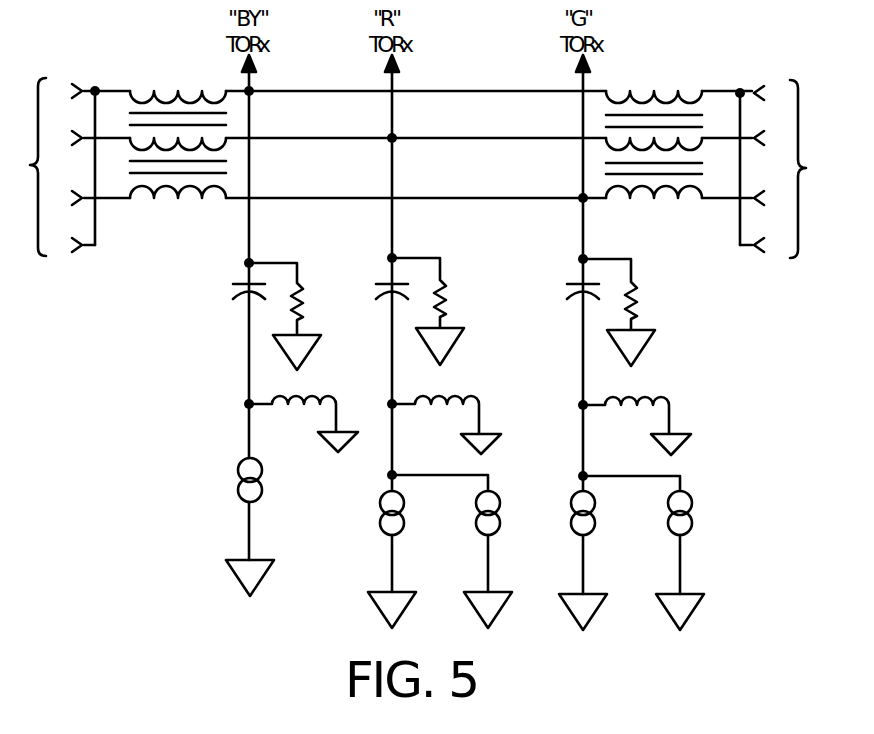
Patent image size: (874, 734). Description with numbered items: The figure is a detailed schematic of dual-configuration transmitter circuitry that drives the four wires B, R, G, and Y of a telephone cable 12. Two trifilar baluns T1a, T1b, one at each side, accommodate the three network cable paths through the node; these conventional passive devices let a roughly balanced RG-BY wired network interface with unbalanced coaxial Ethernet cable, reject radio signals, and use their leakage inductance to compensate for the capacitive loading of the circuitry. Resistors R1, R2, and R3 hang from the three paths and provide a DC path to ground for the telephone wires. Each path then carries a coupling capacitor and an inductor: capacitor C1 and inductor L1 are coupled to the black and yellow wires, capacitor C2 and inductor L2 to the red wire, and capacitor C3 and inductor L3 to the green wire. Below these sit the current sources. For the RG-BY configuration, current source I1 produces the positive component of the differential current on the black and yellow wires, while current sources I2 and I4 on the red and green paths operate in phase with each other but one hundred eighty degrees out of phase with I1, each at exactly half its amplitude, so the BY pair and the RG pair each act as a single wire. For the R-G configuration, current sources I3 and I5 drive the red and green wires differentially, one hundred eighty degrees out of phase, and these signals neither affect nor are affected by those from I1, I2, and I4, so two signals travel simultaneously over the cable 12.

The telephone cable 12 is at (419, 169).
The trifilar balun T1a is at (178, 127).
The trifilar balun T1b is at (654, 127).
The capacitor C1 is at (236, 292).
The capacitor C2 is at (381, 292).
The capacitor C3 is at (573, 292).
The resistor R1 is at (287, 316).
The resistor R2 is at (431, 311).
The resistor R3 is at (621, 312).
The inductor L1 is at (303, 424).
The inductor L2 is at (446, 425).
The inductor L3 is at (637, 426).
The current source I1 is at (272, 527).
The current source I2 is at (415, 559).
The current source I3 is at (502, 559).
The current source I4 is at (604, 560).
The current source I5 is at (692, 560).